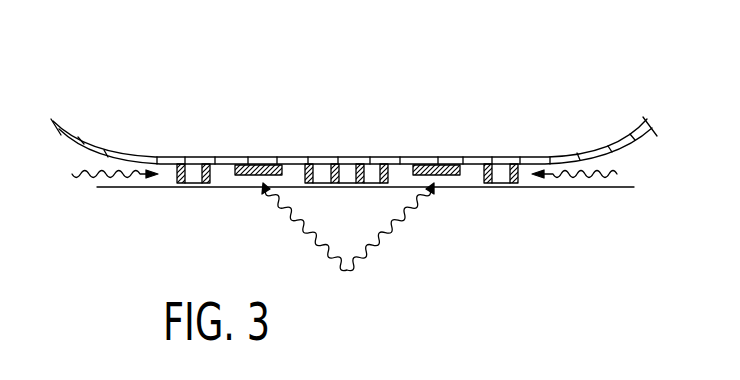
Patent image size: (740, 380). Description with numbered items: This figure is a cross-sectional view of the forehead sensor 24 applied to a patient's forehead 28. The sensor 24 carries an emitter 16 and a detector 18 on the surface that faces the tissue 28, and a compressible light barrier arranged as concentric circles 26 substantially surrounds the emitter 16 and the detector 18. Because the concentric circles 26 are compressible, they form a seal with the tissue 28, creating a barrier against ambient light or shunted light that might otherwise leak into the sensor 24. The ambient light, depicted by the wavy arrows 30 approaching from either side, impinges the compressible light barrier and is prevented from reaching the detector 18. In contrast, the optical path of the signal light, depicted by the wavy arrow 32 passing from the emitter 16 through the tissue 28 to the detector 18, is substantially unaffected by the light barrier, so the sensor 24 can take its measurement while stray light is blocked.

The emitter 16 is at (256, 164).
The detector 18 is at (437, 164).
The forehead sensor 24 is at (552, 71).
The concentric circles 26 is at (181, 184).
The forehead 28 is at (120, 189).
The ambient light 30 is at (80, 177).
The signal light 32 is at (390, 242).